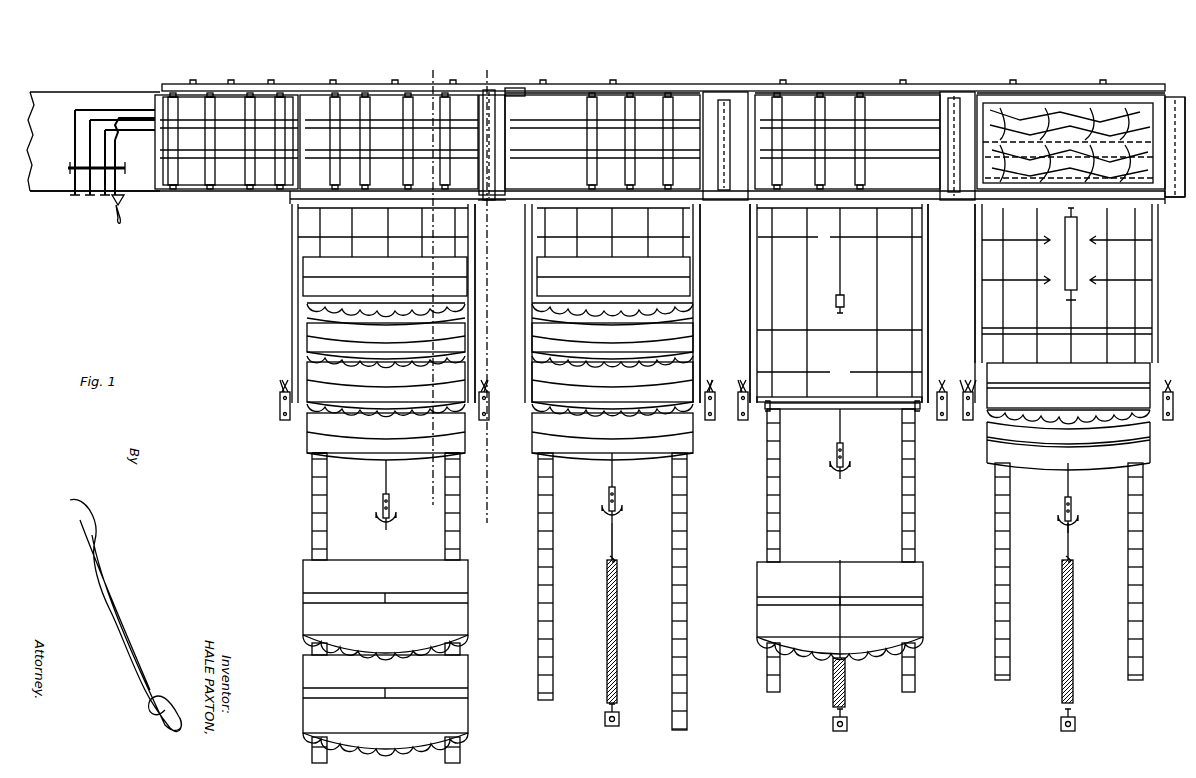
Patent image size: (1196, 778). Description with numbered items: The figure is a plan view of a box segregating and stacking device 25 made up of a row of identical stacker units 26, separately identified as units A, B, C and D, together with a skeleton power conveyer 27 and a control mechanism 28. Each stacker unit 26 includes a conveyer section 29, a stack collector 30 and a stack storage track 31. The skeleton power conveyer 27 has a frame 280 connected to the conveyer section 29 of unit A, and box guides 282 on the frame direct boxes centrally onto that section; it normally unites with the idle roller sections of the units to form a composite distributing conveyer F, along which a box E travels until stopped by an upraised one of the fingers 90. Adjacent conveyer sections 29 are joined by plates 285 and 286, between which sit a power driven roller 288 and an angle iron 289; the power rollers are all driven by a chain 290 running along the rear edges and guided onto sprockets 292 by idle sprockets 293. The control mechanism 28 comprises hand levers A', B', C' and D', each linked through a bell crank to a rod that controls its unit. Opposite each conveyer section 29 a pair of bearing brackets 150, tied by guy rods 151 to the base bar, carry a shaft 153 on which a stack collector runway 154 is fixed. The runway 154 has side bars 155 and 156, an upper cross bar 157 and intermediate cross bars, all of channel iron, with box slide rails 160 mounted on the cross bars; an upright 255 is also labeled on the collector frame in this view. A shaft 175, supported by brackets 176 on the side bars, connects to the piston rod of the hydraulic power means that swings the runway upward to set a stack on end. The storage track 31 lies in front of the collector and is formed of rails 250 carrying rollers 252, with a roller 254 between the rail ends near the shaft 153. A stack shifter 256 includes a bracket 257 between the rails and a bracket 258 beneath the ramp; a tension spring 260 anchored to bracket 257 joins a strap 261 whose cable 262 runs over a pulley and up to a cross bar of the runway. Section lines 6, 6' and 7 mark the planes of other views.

The box segregating and stacking device 25 is at (1072, 50).
The stacker units 26 is at (512, 35).
The skeleton power conveyer 27 is at (652, 75).
The control mechanism 28 is at (99, 244).
The conveyer section 29 is at (362, 98).
The stack collector 30 is at (274, 301).
The stack storage track 31 is at (305, 498).
The fingers 90 is at (478, 95).
The bearing brackets 150 is at (280, 400).
The guy rods 151 is at (284, 378).
The shaft 153 is at (802, 410).
The stack collector runway 154 is at (748, 317).
The side bar 155 is at (303, 264).
The side bar 156 is at (478, 275).
The upper cross bar 157 is at (374, 204).
The box slide rails 160 is at (455, 220).
The shaft 175 is at (1076, 300).
The brackets 176 is at (980, 300).
The rails 250 is at (304, 524).
The rollers 252 is at (672, 606).
The roller 254 is at (846, 410).
The upright 255 is at (750, 290).
The stack shifter 256 is at (930, 266).
The bracket 257 is at (616, 724).
The bracket 258 is at (845, 285).
The tension spring 260 is at (616, 662).
The strap 261 is at (614, 524).
The cable 262 is at (615, 480).
The frame 280 is at (188, 192).
The box guides 282 is at (276, 90).
The plate 285 is at (490, 200).
The plate 286 is at (512, 94).
The power driven roller 288 is at (548, 93).
The angle iron 289 is at (1179, 159).
The chain 290 is at (622, 93).
The sprockets 292 is at (727, 92).
The idle sprockets 293 is at (706, 92).
The stacker unit A is at (377, 48).
The stacker unit B is at (626, 47).
The stacker unit C is at (822, 109).
The stacker unit D is at (1088, 66).
The box E is at (1120, 120).
The composite distributing conveyer F is at (280, 66).
The hand lever A' is at (54, 211).
The hand lever B' is at (72, 211).
The hand lever C' is at (91, 212).
The hand lever D' is at (104, 214).
The section line 6 is at (432, 277).
The section line 7 is at (481, 74).
The section line 6' is at (429, 502).